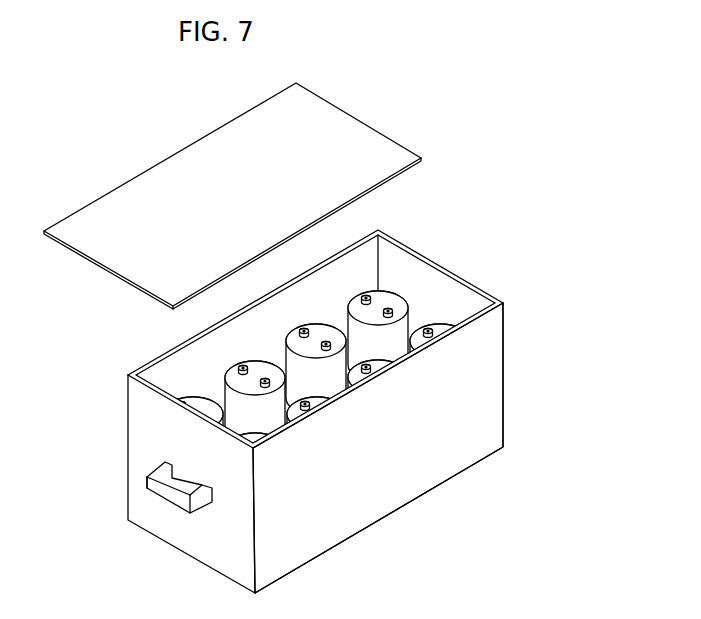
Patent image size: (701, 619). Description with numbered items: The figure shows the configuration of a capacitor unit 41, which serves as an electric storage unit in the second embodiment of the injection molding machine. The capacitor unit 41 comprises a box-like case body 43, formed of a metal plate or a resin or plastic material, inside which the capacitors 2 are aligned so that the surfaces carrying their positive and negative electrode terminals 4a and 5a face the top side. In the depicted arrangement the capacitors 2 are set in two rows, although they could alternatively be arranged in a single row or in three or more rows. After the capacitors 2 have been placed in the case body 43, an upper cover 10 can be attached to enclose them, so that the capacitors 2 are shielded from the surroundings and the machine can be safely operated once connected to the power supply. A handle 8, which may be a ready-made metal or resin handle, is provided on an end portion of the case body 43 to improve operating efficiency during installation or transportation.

The upper cover 10 is at (383, 143).
The capacitor 2 is at (391, 302).
The negative electrode terminal 5a is at (240, 366).
The positive electrode terminal 4a is at (260, 381).
The case body 43 is at (487, 378).
The capacitor unit 41 is at (326, 408).
The handle 8 is at (158, 493).